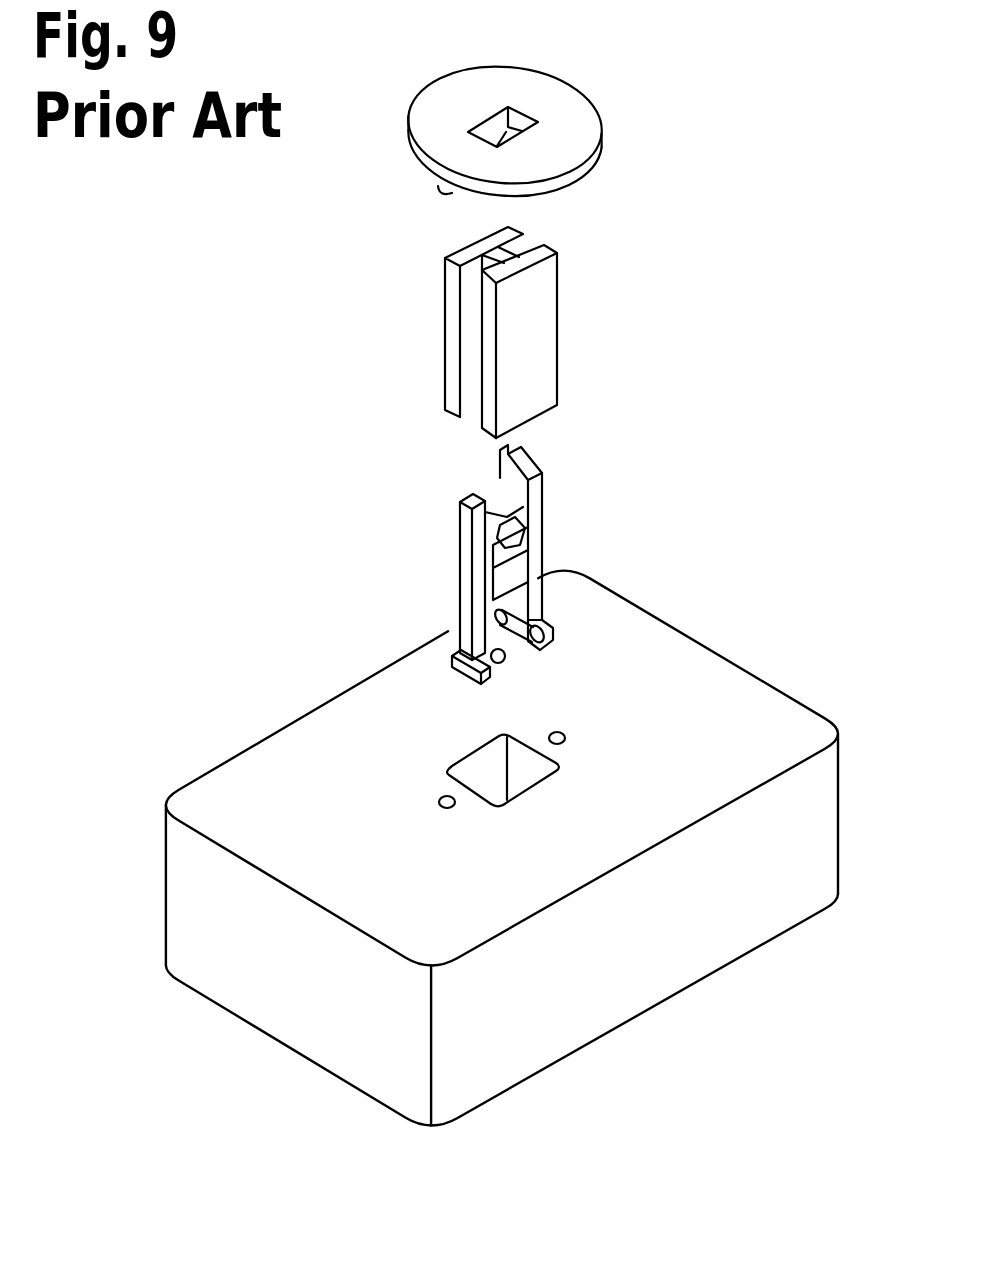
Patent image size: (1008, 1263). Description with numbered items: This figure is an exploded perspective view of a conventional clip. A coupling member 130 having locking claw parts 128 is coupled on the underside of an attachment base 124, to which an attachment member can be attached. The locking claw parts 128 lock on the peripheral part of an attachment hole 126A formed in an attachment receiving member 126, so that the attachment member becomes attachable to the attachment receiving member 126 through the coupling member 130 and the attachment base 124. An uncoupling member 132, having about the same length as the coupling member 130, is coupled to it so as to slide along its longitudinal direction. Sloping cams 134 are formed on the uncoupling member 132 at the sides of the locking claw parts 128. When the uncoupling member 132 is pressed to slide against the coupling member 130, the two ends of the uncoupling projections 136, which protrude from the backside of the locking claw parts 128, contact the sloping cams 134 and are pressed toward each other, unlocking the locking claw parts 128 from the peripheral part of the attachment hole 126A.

The attachment base 124 is at (585, 118).
The attachment receiving member 126 is at (514, 848).
The attachment hole 126A is at (528, 784).
The locking claw parts 128 is at (460, 646).
The coupling member 130 is at (513, 578).
The uncoupling member 132 is at (536, 359).
The sloping cams 134 is at (478, 335).
The uncoupling projections 136 is at (540, 652).